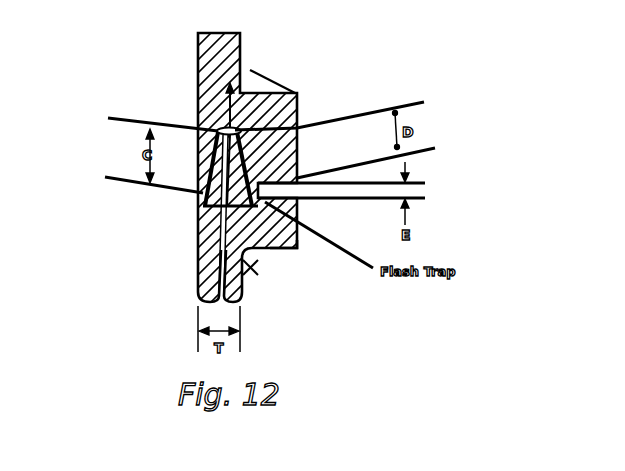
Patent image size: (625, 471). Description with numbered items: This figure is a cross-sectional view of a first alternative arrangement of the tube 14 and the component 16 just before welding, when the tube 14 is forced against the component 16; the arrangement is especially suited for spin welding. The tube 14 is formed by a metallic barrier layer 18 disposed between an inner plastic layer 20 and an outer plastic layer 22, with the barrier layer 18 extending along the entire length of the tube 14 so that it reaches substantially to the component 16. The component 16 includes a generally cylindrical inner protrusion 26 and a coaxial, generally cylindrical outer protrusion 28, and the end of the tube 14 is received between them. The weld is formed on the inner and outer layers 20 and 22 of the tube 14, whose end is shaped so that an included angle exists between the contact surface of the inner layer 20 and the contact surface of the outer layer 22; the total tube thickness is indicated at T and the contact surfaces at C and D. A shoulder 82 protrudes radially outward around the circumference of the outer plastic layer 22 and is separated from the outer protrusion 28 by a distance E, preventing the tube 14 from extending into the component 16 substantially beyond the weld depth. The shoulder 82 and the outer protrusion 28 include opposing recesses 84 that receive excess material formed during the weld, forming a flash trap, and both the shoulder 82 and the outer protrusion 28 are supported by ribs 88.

The tube 14 is at (172, 263).
The component 16 is at (192, 76).
The metallic barrier layer 18 is at (243, 316).
The inner plastic layer 20 is at (198, 287).
The outer plastic layer 22 is at (240, 293).
The inner protrusion 26 is at (200, 158).
The outer protrusion 28 is at (297, 143).
The shoulder 82 is at (288, 250).
The opposing recesses 84 is at (297, 158).
The ribs 88 is at (254, 66).